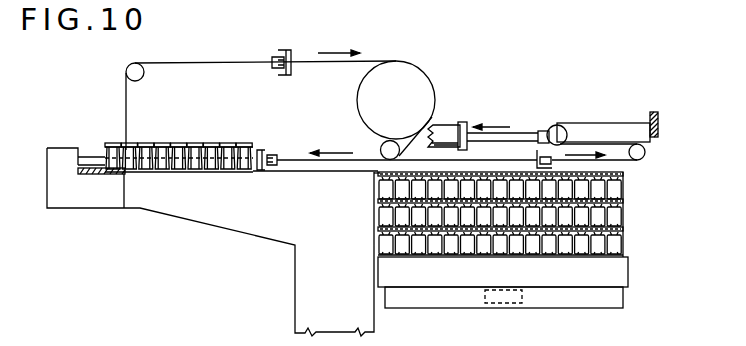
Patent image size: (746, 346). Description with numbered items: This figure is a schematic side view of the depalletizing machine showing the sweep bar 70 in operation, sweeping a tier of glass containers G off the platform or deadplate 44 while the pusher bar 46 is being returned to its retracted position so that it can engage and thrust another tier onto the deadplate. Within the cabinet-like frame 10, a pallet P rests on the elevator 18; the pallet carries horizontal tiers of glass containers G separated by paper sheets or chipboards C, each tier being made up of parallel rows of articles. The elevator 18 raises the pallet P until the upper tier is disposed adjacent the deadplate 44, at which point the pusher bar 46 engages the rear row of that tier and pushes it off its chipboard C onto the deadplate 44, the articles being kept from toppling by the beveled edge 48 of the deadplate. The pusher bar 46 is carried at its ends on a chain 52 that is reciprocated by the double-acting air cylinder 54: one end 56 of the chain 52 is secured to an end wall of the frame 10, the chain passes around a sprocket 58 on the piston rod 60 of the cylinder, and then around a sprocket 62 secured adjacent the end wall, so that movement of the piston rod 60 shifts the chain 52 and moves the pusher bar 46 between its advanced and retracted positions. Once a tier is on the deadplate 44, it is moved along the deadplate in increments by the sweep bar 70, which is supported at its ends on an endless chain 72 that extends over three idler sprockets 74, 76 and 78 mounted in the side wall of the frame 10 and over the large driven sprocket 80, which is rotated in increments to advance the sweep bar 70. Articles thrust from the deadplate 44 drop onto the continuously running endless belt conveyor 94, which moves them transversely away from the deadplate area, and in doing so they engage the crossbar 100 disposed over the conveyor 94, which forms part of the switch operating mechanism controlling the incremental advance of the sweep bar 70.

The frame 10 is at (298, 285).
The elevator 18 is at (557, 300).
The deadplate 44 is at (295, 172).
The pusher bar 46 is at (536, 155).
The beveled edge 48 is at (374, 173).
The chain 52 is at (603, 123).
The double-acting air cylinder 54 is at (447, 126).
The end of the chain 56 is at (653, 113).
The sprocket 58 is at (560, 124).
The piston rod 60 is at (531, 133).
The sprocket 62 is at (645, 152).
The sweep bar 70 is at (305, 34).
The chain 72 is at (213, 62).
The idler sprocket 74 is at (382, 146).
The idler sprocket 76 is at (131, 150).
The idler sprocket 78 is at (126, 73).
The driven sprocket 80 is at (400, 72).
The conveyor 94 is at (101, 175).
The crossbar 100 is at (98, 152).
The chipboard C is at (625, 172).
The glass container G is at (203, 145).
The pallet P is at (514, 283).